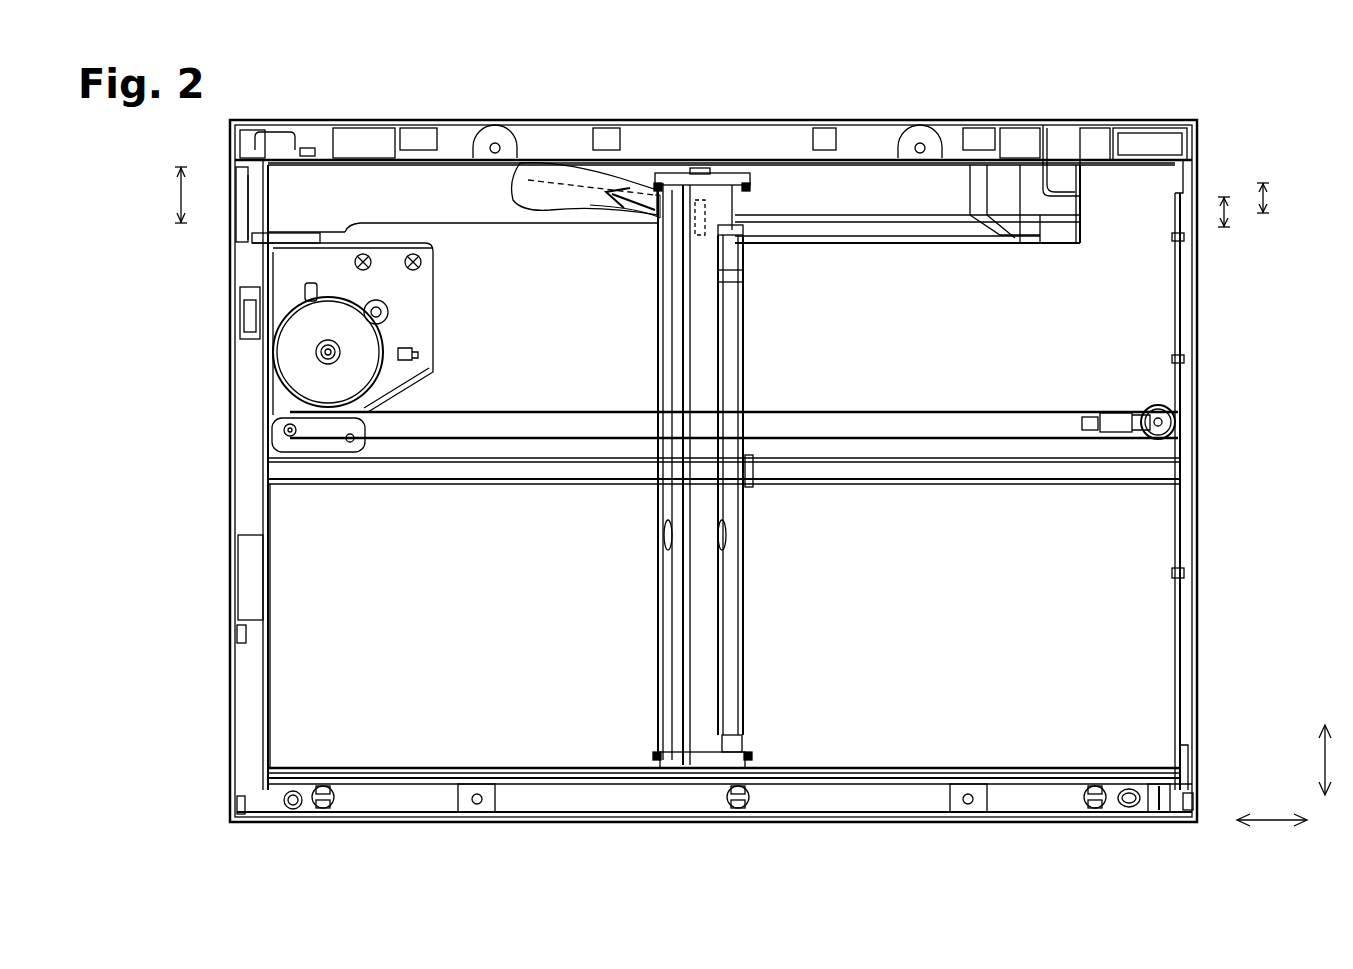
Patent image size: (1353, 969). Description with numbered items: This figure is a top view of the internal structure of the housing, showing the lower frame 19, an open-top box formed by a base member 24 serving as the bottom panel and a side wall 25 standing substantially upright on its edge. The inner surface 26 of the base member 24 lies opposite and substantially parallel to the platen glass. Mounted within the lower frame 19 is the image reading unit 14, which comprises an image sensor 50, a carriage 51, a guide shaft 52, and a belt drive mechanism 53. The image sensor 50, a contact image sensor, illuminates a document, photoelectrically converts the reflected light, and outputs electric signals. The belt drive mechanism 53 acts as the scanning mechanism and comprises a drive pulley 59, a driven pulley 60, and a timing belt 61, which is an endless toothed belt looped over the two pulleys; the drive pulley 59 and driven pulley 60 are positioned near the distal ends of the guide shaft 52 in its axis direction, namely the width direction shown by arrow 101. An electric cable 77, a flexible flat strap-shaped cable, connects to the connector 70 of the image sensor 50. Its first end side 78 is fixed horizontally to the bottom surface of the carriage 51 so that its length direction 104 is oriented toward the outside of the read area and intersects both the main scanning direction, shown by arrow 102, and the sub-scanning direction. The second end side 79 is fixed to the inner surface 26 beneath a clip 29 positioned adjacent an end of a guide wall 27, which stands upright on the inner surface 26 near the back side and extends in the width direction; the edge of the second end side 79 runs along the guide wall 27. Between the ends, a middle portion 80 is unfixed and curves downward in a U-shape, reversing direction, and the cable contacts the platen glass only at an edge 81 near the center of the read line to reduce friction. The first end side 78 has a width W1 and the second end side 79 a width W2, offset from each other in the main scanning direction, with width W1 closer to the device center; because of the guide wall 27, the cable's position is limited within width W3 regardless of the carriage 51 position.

The image reading unit 14 is at (650, 561).
The lower frame 19 is at (226, 752).
The base member 24 is at (483, 650).
The side wall 25 is at (1206, 606).
The inner surface 26 is at (447, 200).
The guide wall 27 is at (892, 212).
The clip 29 is at (1060, 190).
The image sensor 50 is at (720, 562).
The carriage 51 is at (742, 654).
The guide shaft 52 is at (960, 486).
The belt drive mechanism 53 is at (446, 406).
The drive pulley 59 is at (290, 437).
The driven pulley 60 is at (1156, 406).
The timing belt 61 is at (598, 410).
The connector 70 is at (705, 225).
The electric cable 77 is at (825, 217).
The first end side 78 is at (645, 200).
The second end side 79 is at (963, 208).
The middle portion 80 is at (525, 198).
The edge 81 is at (540, 192).
The arrow indicating width direction 101 is at (1273, 822).
The arrow indicating main scanning direction 102 is at (1324, 760).
The length direction 104 is at (648, 185).
The width W1 is at (1240, 212).
The width W2 is at (1280, 198).
The width W3 is at (164, 195).